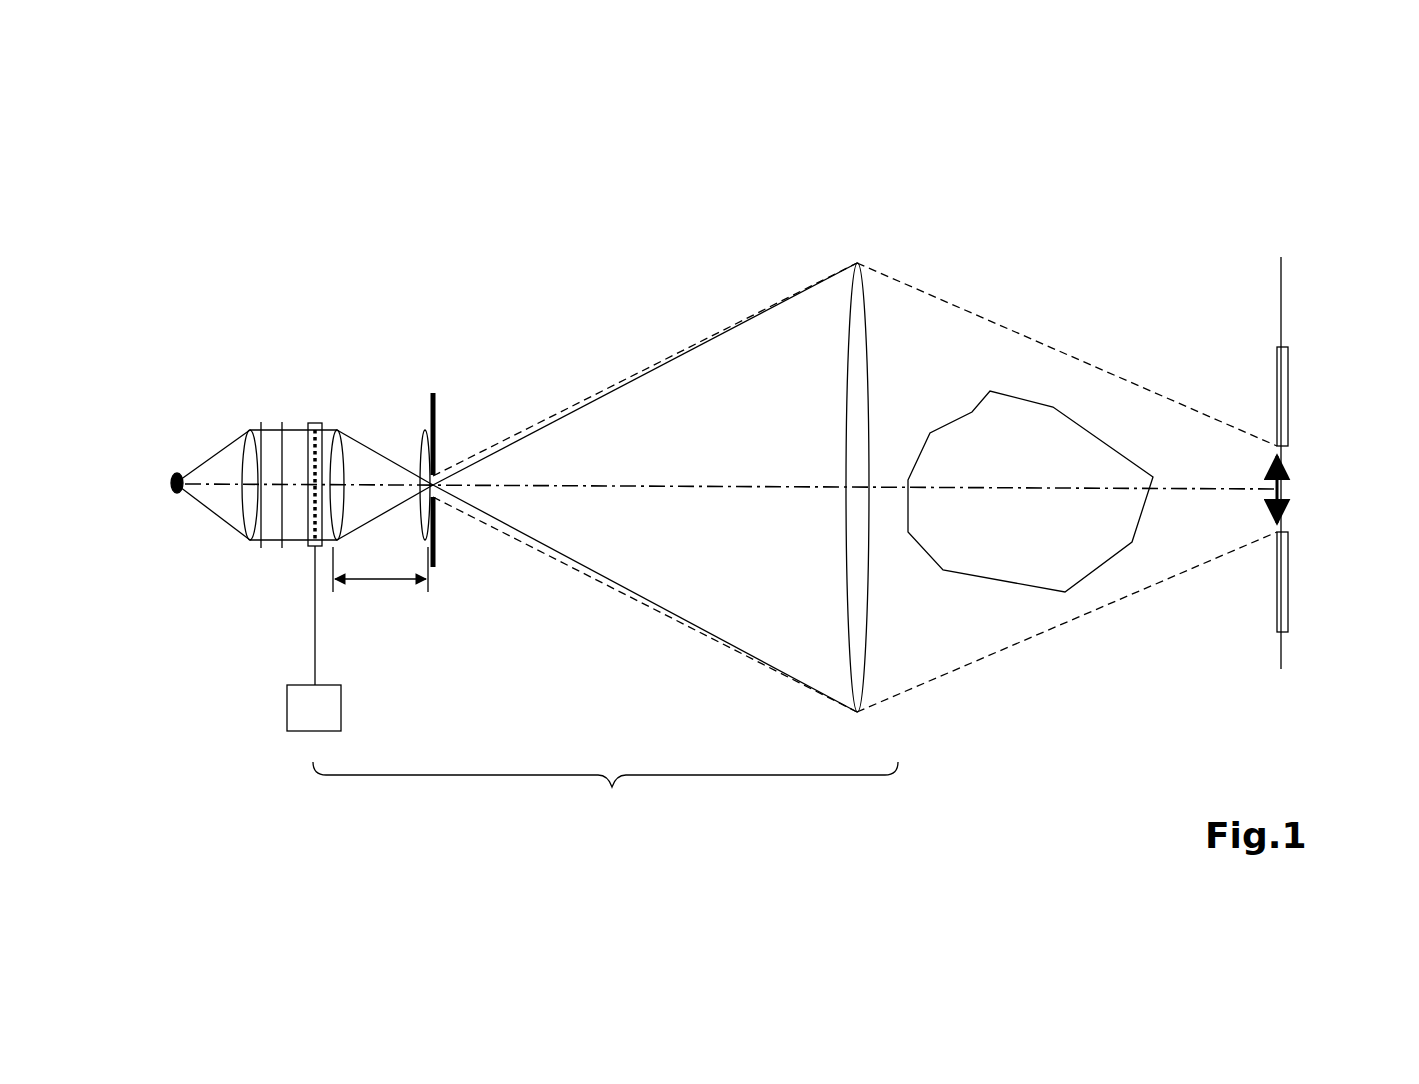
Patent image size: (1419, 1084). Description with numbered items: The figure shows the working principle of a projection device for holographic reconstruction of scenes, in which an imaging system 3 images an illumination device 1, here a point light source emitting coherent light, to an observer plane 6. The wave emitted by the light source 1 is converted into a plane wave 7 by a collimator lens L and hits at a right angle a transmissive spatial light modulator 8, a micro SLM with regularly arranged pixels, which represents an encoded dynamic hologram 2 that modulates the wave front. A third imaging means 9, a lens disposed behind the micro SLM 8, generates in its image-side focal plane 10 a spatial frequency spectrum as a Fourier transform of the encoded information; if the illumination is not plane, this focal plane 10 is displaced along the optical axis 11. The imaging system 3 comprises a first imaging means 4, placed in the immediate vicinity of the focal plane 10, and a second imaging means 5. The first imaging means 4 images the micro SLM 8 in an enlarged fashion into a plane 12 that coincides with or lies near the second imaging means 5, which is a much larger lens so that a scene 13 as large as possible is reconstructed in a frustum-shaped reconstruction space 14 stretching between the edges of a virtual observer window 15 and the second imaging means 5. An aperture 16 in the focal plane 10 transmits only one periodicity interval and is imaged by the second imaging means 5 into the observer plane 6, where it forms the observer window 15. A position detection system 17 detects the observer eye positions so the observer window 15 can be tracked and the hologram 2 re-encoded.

The illumination device 1 is at (175, 472).
The encoded dynamic hologram 2 is at (315, 517).
The imaging system 3 is at (605, 796).
The first imaging means 4 is at (423, 432).
The second imaging means 5 is at (860, 430).
The observer plane 6 is at (1278, 485).
The plane wave 7 is at (258, 548).
The transmissive spatial light modulator 8 is at (308, 426).
The third imaging means 9 is at (338, 432).
The focal plane 10 is at (432, 390).
The optical axis 11 is at (672, 485).
The plane 12 is at (857, 245).
The scene 13 is at (972, 435).
The reconstruction space 14 is at (1107, 430).
The virtual observer window 15 is at (1321, 460).
The aperture 16 is at (438, 533).
The position detection system 17 is at (314, 638).
The collimator lens L is at (250, 432).